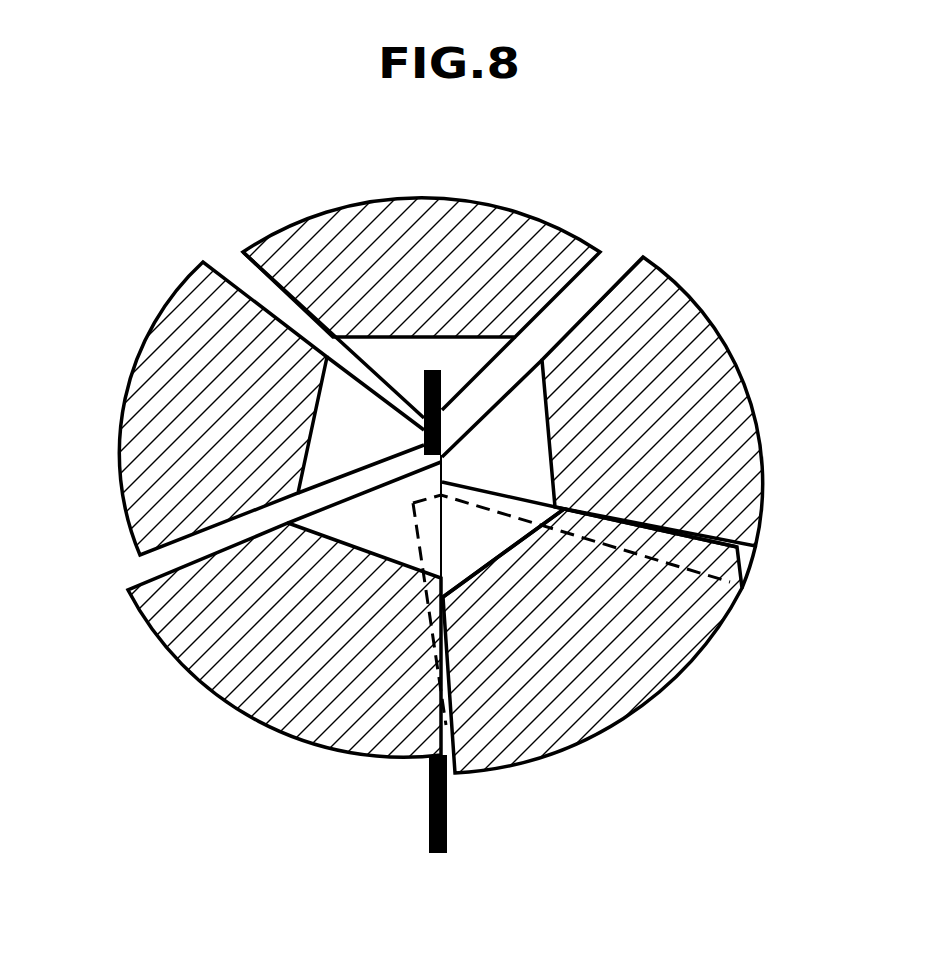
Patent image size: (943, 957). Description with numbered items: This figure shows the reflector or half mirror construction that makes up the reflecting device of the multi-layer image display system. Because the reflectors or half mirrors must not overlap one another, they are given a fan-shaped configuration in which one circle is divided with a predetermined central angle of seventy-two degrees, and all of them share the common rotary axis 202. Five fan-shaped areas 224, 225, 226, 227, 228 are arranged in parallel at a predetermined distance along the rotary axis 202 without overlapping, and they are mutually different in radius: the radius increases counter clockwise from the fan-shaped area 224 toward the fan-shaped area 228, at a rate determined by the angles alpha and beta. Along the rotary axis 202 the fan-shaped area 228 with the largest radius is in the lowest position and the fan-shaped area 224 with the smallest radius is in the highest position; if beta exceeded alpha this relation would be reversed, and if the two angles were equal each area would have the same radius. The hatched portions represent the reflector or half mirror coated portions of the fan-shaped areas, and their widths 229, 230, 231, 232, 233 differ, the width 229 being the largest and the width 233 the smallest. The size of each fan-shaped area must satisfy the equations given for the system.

The rotary axis 202 is at (447, 837).
The fan-shaped area 224 is at (471, 450).
The fan-shaped area 225 is at (471, 450).
The fan-shaped area 226 is at (471, 451).
The fan-shaped area 227 is at (471, 450).
The fan-shaped area 228 is at (471, 450).
The width 229 is at (525, 163).
The width 230 is at (83, 342).
The width 231 is at (223, 763).
The width 232 is at (703, 740).
The width 233 is at (820, 492).